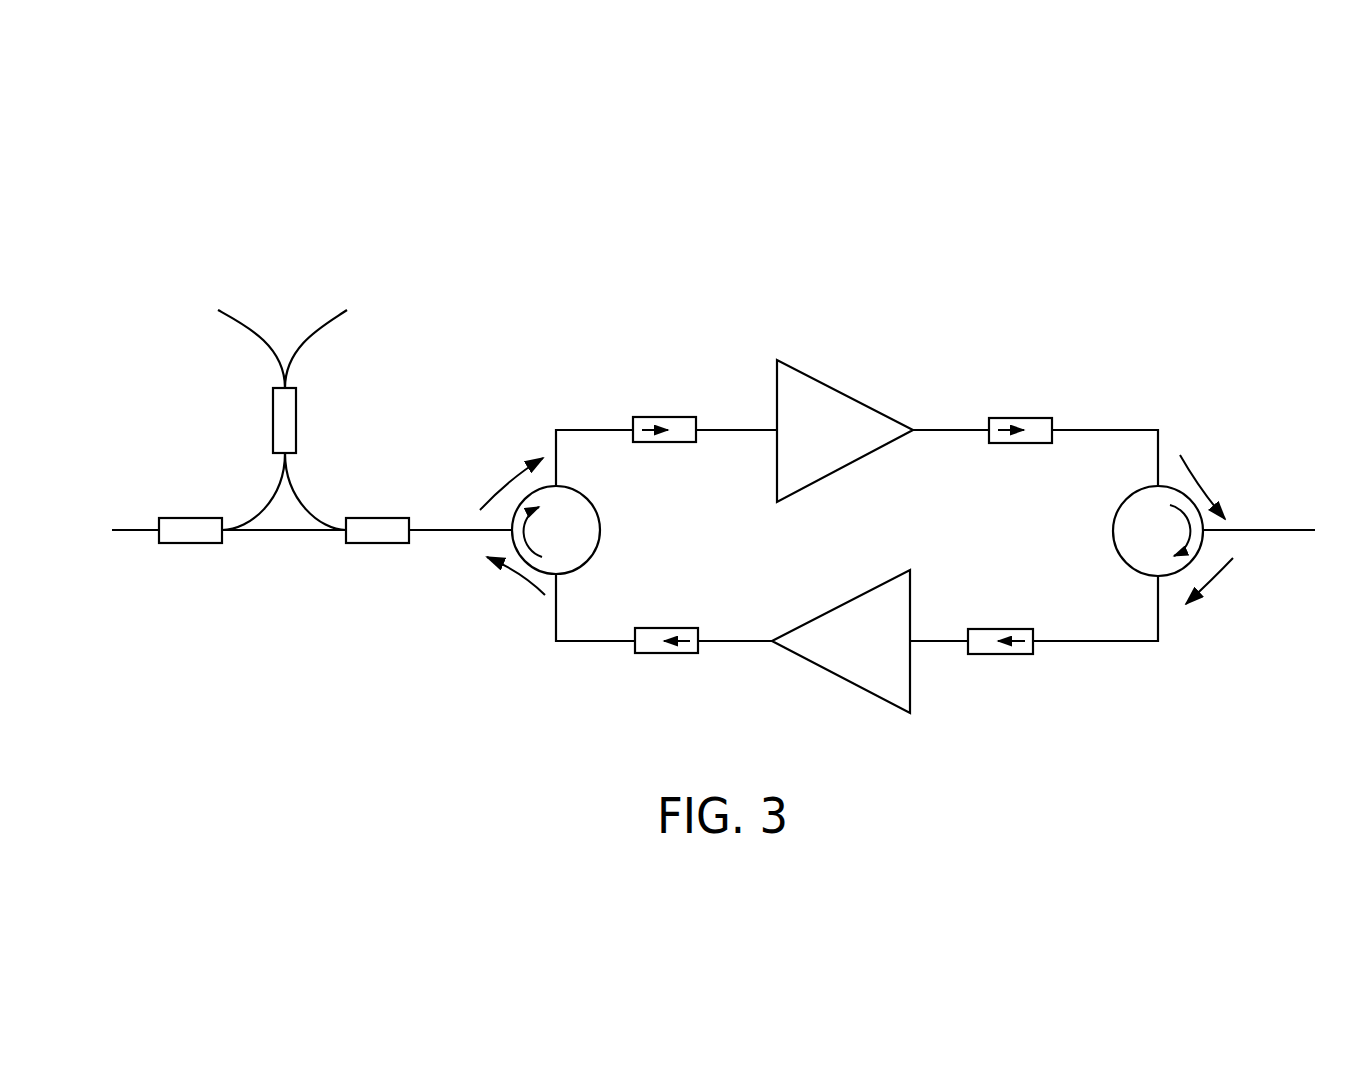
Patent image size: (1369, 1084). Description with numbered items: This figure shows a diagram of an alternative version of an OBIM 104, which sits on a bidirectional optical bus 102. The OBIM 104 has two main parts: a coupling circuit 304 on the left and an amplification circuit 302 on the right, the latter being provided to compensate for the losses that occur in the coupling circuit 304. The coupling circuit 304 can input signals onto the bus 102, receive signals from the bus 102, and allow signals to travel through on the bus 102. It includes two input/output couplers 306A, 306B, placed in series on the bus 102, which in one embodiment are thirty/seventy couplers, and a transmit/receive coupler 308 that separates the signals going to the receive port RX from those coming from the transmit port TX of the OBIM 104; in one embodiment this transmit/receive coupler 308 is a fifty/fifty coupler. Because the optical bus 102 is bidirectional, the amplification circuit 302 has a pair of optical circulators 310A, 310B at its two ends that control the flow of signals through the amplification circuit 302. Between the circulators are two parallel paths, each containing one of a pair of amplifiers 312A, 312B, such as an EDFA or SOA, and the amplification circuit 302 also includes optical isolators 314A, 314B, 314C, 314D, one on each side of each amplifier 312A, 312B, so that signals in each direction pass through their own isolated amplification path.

The bus 102 is at (140, 528).
The OBIM 104 is at (931, 240).
The amplification circuit 302 is at (856, 498).
The coupling circuit 304 is at (335, 393).
The input/output coupler 306A is at (188, 518).
The input/output coupler 306B is at (376, 518).
The transmit/receive coupler 308 is at (300, 412).
The optical circulator 310A is at (600, 507).
The optical circulator 310B is at (1115, 520).
The amplifier 312A is at (857, 400).
The amplifier 312B is at (877, 587).
The optical isolator 314A is at (657, 415).
The optical isolator 314B is at (1030, 418).
The optical isolator 314C is at (1013, 628).
The optical isolator 314D is at (665, 625).